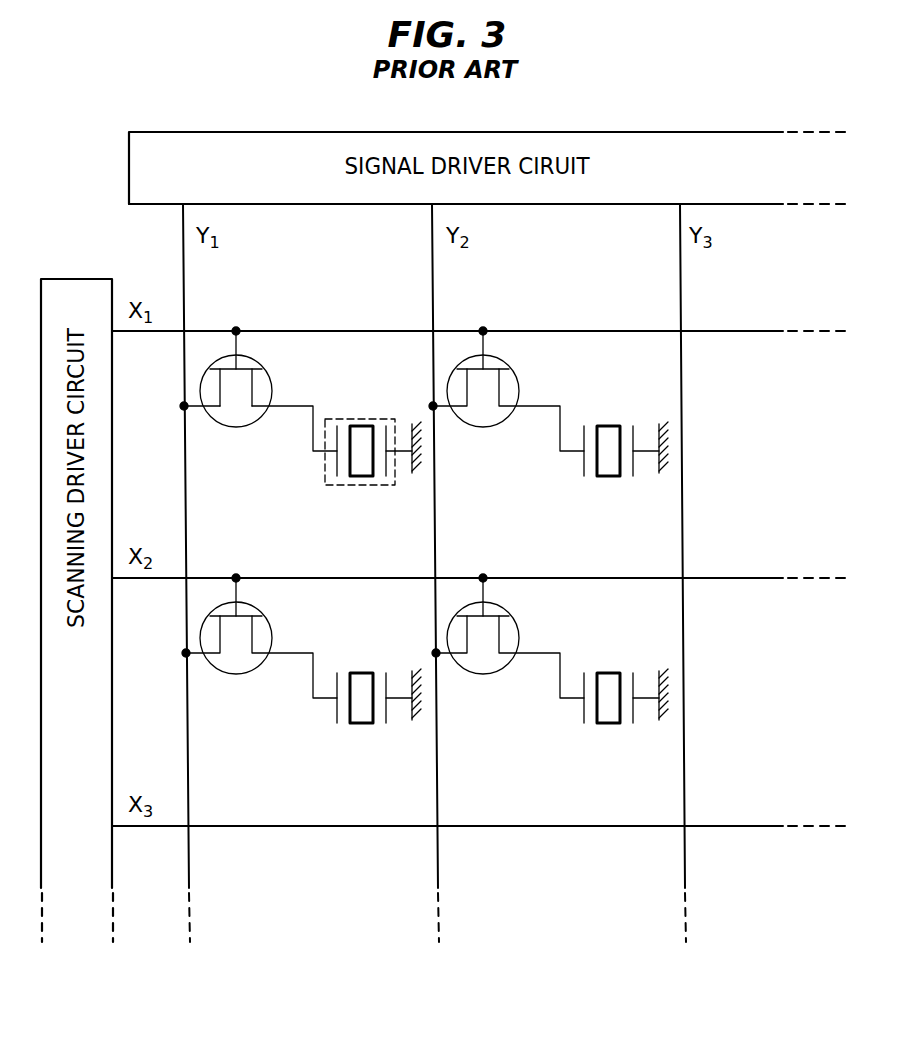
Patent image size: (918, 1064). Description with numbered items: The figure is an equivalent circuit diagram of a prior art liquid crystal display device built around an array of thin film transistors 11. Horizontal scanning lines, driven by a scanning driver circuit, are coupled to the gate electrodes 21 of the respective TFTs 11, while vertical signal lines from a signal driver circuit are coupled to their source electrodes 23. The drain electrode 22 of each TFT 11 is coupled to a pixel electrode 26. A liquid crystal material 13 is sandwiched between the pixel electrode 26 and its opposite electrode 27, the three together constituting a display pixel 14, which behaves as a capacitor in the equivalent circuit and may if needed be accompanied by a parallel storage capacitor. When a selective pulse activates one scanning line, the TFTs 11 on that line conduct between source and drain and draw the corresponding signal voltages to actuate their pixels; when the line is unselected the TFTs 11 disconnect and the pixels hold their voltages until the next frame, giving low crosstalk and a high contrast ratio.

The thin film transistor 11 is at (224, 427).
The liquid crystal material 13 is at (361, 432).
The display pixel 14 is at (375, 487).
The gate electrode 21 is at (239, 351).
The drain electrode 22 is at (289, 405).
The source electrode 23 is at (186, 410).
The pixel electrode 26 is at (332, 462).
The opposite electrode 27 is at (389, 467).